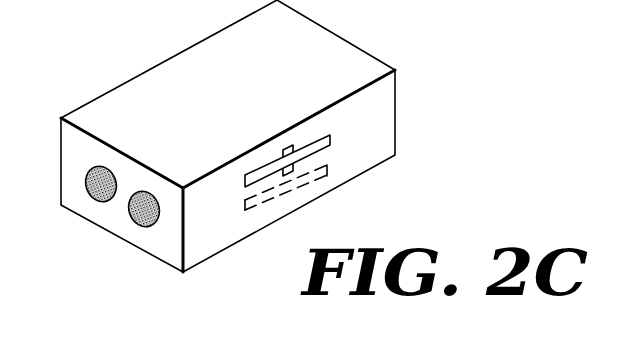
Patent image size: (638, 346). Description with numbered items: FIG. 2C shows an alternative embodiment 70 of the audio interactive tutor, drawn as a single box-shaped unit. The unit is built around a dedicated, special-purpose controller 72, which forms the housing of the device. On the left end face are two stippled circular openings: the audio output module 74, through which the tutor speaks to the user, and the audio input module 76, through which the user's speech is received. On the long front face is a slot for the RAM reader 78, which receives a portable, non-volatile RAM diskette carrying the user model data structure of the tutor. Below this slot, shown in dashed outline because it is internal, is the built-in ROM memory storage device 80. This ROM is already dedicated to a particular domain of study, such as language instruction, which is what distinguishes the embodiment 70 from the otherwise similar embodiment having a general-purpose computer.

The embodiment 70 is at (213, 136).
The dedicated, special-purpose controller 72 is at (350, 52).
The audio output module 74 is at (86, 181).
The audio input module 76 is at (130, 216).
The RAM reader 78 is at (328, 136).
The built-in ROM memory storage device 80 is at (327, 176).